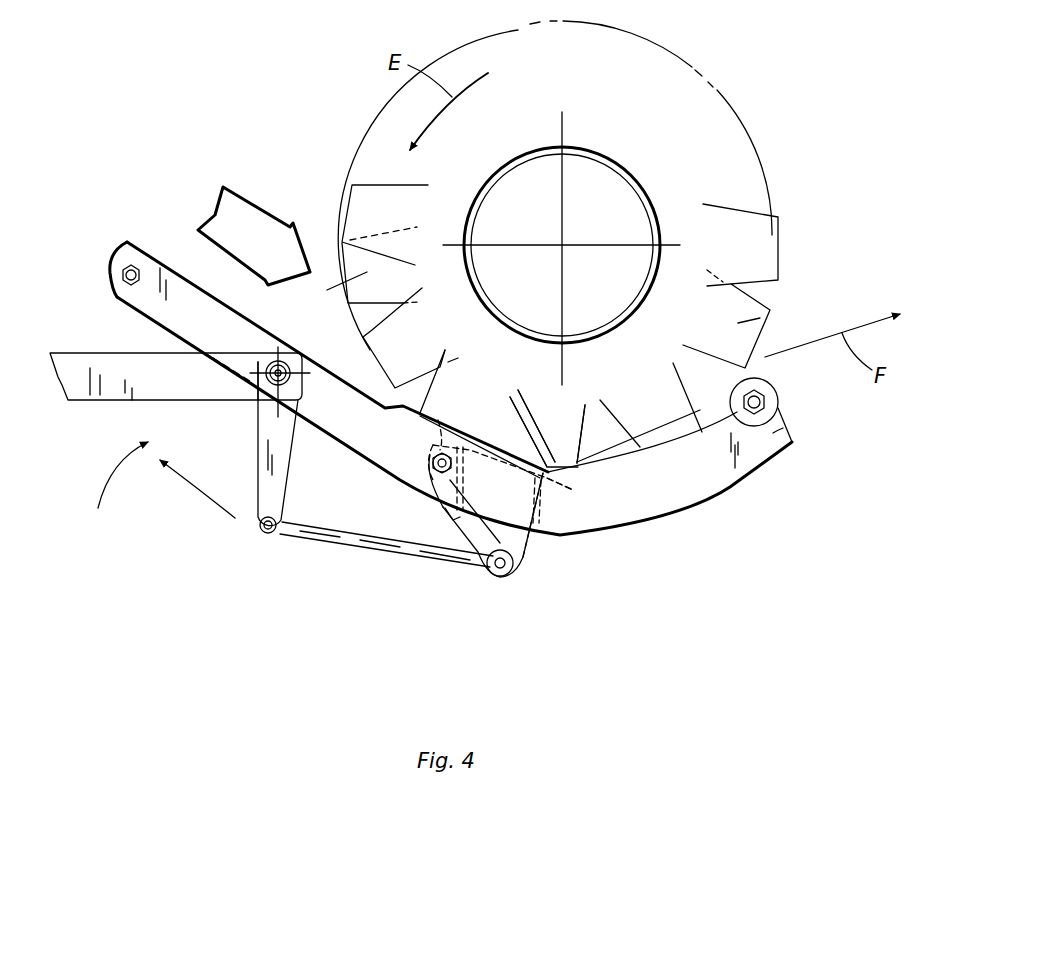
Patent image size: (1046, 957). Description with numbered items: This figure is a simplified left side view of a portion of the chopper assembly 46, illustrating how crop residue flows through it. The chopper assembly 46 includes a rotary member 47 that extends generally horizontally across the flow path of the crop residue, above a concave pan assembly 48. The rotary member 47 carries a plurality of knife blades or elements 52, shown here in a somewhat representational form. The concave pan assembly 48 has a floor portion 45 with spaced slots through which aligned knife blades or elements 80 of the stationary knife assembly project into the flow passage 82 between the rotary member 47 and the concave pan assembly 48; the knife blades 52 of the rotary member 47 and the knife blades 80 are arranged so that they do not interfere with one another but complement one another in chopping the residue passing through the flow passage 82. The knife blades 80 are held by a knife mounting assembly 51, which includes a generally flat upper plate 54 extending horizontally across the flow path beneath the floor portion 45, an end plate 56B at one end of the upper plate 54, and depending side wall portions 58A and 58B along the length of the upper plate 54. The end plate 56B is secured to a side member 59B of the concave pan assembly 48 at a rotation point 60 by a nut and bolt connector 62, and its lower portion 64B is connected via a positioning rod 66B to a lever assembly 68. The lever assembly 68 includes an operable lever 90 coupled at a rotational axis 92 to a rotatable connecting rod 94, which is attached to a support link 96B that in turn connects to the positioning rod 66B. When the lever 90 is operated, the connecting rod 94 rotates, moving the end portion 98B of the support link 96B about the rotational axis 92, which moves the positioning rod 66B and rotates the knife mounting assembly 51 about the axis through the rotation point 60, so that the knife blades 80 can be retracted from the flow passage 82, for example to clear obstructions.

The floor portion 45 is at (467, 430).
The chopper assembly 46 is at (333, 130).
The rotary member 47 is at (640, 187).
The concave pan assembly 48 is at (778, 462).
The knife mounting assembly 51 is at (578, 490).
The knife blades or elements 52 is at (365, 203).
The upper plate 54 is at (477, 537).
The end plate 56B is at (540, 520).
The side wall portion 58A is at (430, 500).
The side wall portion 58B is at (565, 505).
The side member 59B is at (790, 425).
The rotation points 60 is at (430, 458).
The nut and bolt connectors 62 is at (433, 453).
The lower portion 64B is at (523, 530).
The positioning rod 66B is at (307, 540).
The lever assembly 68 is at (114, 490).
The knife blades or elements 80 is at (500, 417).
The flow passage 82 is at (600, 440).
The operable lever 90 is at (92, 400).
The rotational axis 92 is at (268, 355).
The connecting rod 94 is at (260, 390).
The support link 96B is at (257, 462).
The end portion 98B is at (257, 523).